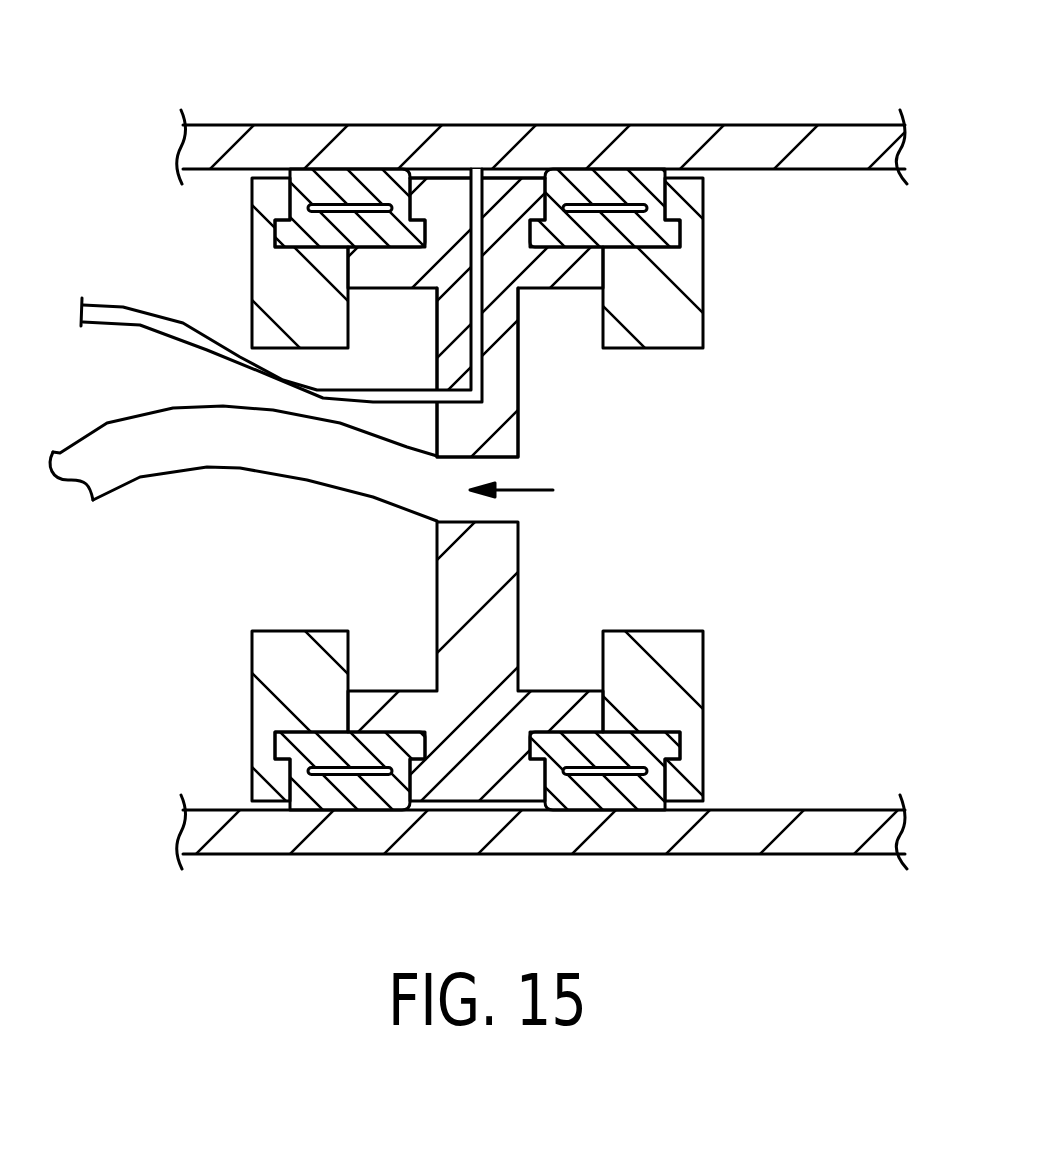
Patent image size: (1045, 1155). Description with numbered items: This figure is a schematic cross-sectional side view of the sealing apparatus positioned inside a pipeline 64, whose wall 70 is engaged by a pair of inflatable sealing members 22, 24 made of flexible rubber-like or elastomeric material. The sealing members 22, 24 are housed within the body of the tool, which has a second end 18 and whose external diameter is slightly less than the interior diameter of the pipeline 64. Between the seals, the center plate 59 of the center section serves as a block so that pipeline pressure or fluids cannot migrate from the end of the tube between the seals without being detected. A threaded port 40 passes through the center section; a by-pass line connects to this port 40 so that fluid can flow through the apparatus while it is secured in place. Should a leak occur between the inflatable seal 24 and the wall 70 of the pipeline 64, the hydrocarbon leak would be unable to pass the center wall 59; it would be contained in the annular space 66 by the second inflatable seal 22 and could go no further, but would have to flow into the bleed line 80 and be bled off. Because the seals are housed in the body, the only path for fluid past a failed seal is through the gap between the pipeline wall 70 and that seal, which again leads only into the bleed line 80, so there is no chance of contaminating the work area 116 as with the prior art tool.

The second end 18 is at (690, 272).
The sealing member 22 is at (360, 183).
The sealing member 24 is at (613, 178).
The port 40 is at (535, 490).
The center plate 59 is at (503, 395).
The pipeline 64 is at (765, 124).
The annular space 66 is at (533, 178).
The wall 70 is at (817, 170).
The bleed line 80 is at (472, 169).
The work area 116 is at (214, 548).